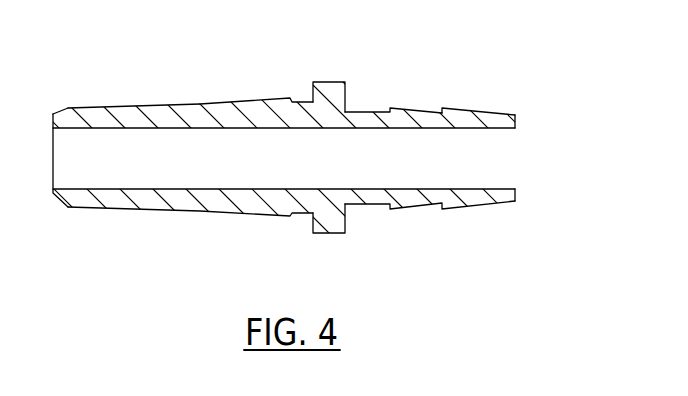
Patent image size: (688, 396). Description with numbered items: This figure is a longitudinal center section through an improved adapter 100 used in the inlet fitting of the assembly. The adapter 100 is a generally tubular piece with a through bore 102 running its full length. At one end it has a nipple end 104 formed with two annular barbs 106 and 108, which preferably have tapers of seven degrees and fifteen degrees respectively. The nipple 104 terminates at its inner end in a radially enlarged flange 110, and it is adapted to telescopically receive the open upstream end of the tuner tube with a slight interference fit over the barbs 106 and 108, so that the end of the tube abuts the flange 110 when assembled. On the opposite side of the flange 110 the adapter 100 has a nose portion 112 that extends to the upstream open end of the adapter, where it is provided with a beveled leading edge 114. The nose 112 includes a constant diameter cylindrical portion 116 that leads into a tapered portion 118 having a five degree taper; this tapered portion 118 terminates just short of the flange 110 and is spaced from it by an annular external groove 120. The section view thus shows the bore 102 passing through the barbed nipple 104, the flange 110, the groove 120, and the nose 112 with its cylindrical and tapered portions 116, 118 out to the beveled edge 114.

The adapter 100 is at (480, 87).
The through bore 102 is at (505, 182).
The nipple end 104 is at (513, 115).
The annular barb 106 is at (447, 108).
The annular barb 108 is at (395, 110).
The flange 110 is at (333, 233).
The nose portion 112 is at (46, 106).
The beveled leading edge 114 is at (60, 200).
The cylindrical portion 116 is at (115, 108).
The tapered portion 118 is at (213, 102).
The annular external groove 120 is at (300, 92).